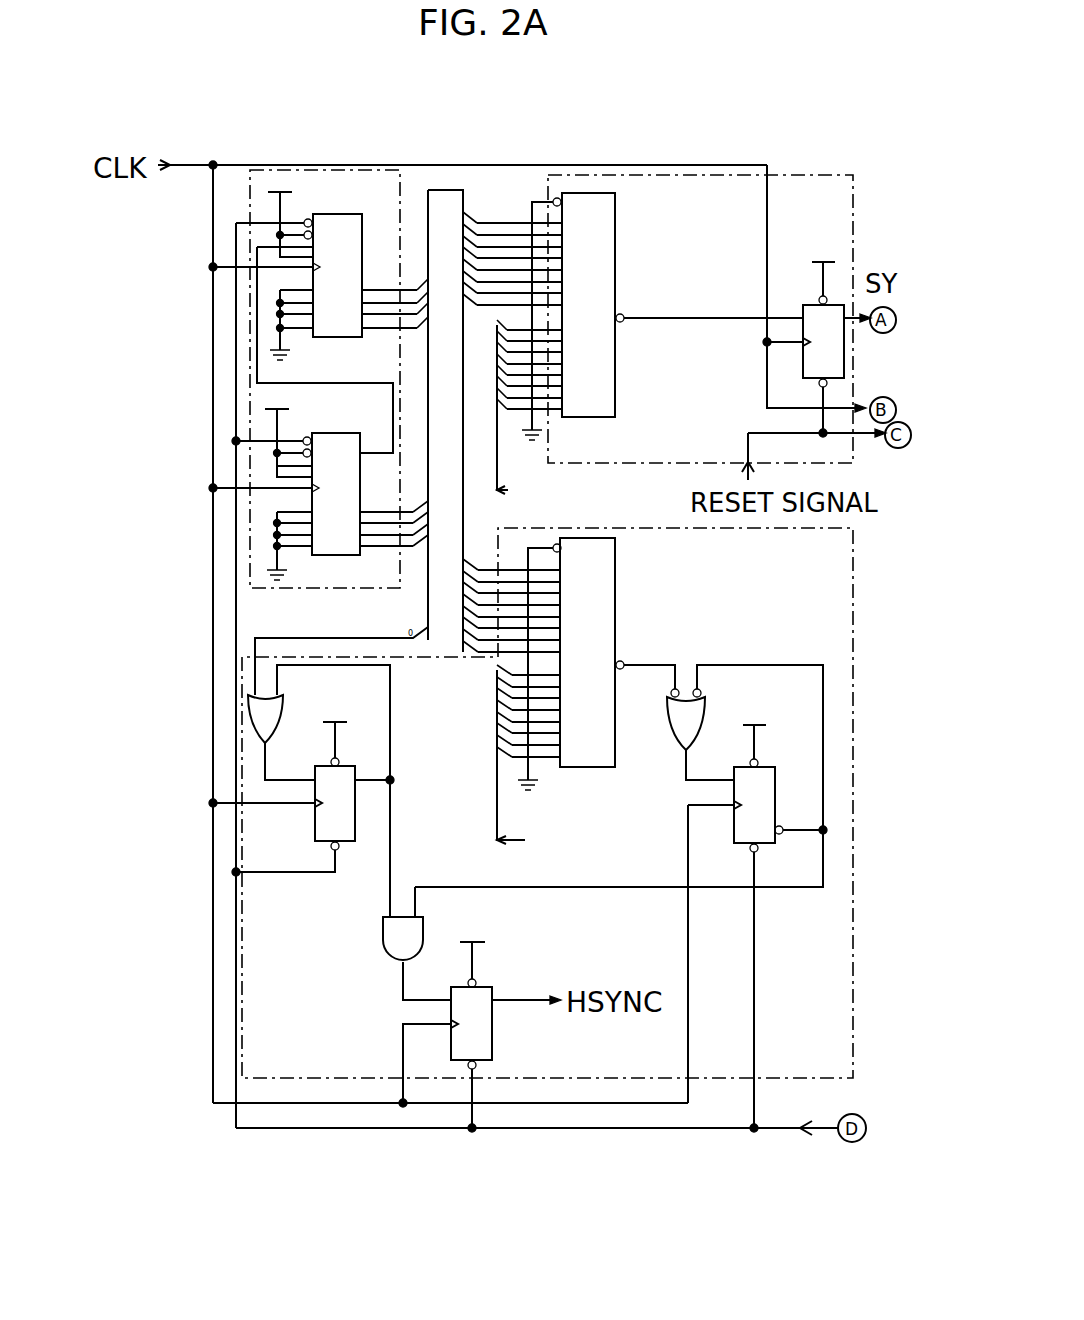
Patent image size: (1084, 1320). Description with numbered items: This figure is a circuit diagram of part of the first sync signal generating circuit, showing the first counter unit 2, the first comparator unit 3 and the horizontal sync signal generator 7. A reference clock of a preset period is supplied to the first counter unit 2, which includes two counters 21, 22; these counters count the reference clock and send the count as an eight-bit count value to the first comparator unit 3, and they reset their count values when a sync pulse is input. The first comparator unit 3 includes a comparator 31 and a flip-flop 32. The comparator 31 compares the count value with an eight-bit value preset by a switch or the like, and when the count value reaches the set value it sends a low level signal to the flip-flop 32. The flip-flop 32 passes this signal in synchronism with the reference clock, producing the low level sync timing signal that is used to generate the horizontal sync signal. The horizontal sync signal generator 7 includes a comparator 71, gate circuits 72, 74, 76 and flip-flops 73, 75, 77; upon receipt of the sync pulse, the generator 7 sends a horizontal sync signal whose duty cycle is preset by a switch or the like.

The first counter unit 2 is at (403, 198).
The first comparator unit 3 is at (792, 178).
The horizontal sync signal generator 7 is at (860, 632).
The counter 21 is at (334, 433).
The counter 22 is at (344, 214).
The comparator 31 is at (615, 248).
The flip-flop 32 is at (806, 305).
The comparator 71 is at (615, 600).
The gate circuit 72 is at (706, 714).
The flip-flop 73 is at (768, 767).
The gate circuit 74 is at (283, 710).
The flip-flop 75 is at (340, 762).
The gate circuit 76 is at (424, 936).
The flip-flop 77 is at (482, 987).